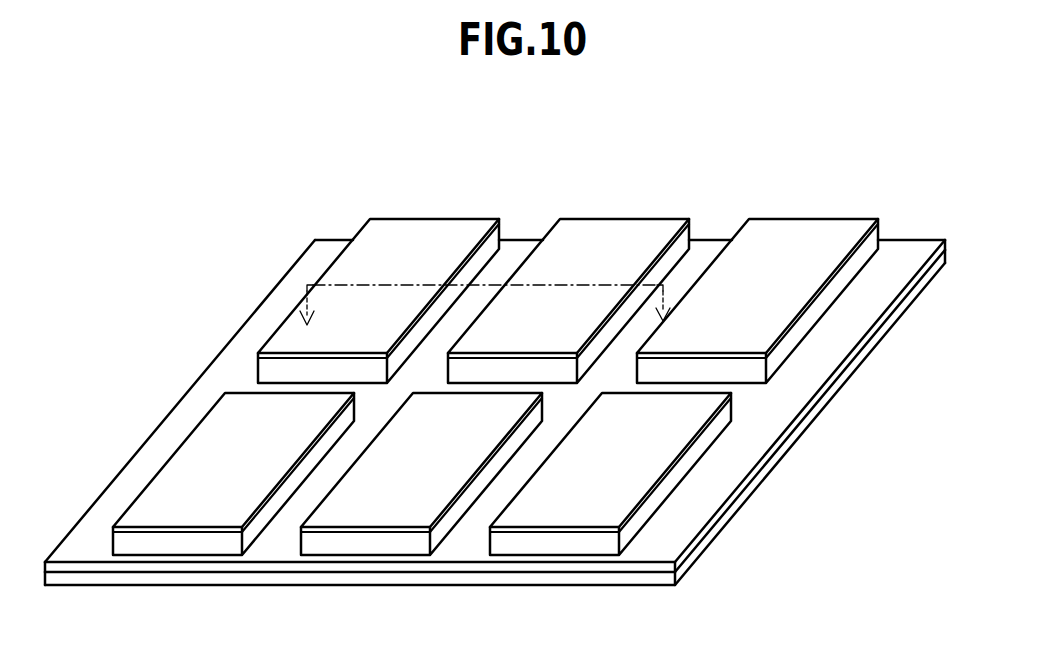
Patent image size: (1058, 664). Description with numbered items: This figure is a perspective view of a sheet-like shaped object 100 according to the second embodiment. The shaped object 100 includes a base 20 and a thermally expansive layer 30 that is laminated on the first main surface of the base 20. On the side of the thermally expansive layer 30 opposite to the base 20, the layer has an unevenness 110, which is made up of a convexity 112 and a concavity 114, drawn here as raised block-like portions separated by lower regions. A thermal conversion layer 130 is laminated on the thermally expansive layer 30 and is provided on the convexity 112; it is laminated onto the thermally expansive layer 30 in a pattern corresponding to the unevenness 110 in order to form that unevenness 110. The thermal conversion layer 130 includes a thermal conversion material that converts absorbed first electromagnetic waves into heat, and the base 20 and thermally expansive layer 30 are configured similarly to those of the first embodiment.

The shaped object 100 is at (880, 172).
The base 20 is at (795, 445).
The thermally expansive layer 30 is at (877, 323).
The unevenness 110 is at (483, 158).
The convexity 112 is at (502, 232).
The concavity 114 is at (516, 258).
The thermal conversion layer 130 is at (432, 218).